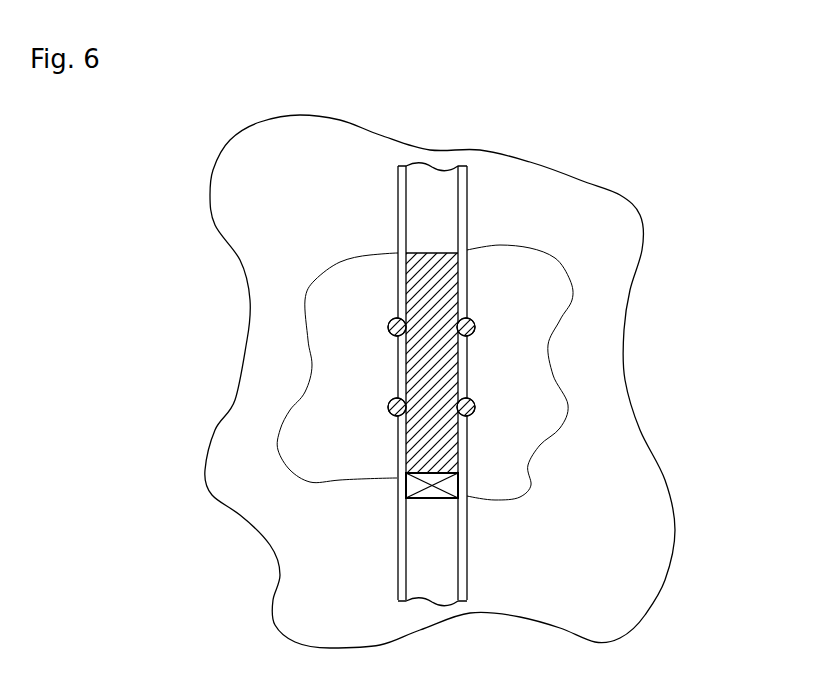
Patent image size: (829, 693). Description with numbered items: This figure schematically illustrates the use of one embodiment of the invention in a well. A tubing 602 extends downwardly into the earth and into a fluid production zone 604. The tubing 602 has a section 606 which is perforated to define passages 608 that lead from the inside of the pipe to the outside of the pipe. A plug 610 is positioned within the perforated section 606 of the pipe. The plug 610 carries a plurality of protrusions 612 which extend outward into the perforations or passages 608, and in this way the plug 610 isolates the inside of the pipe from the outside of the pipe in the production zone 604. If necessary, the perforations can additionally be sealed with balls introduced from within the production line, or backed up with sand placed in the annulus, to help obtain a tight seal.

The tubing 602 is at (473, 200).
The fluid production zone 604 is at (512, 362).
The perforated section 606 is at (398, 380).
The passages 608 is at (390, 321).
The plug 610 is at (399, 419).
The protrusions 612 is at (388, 408).